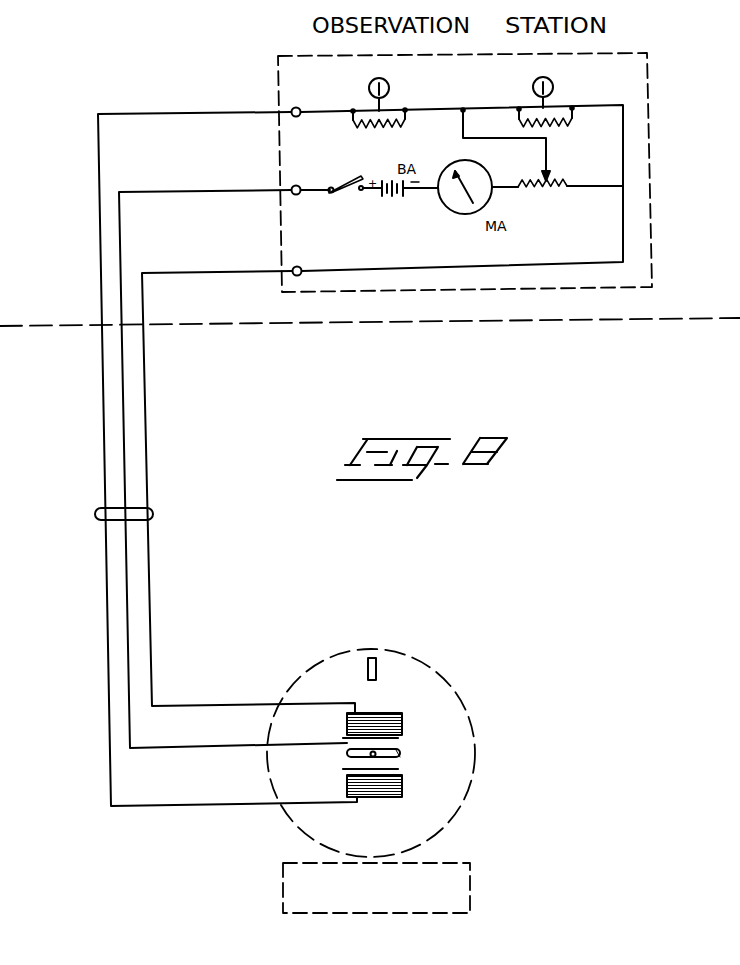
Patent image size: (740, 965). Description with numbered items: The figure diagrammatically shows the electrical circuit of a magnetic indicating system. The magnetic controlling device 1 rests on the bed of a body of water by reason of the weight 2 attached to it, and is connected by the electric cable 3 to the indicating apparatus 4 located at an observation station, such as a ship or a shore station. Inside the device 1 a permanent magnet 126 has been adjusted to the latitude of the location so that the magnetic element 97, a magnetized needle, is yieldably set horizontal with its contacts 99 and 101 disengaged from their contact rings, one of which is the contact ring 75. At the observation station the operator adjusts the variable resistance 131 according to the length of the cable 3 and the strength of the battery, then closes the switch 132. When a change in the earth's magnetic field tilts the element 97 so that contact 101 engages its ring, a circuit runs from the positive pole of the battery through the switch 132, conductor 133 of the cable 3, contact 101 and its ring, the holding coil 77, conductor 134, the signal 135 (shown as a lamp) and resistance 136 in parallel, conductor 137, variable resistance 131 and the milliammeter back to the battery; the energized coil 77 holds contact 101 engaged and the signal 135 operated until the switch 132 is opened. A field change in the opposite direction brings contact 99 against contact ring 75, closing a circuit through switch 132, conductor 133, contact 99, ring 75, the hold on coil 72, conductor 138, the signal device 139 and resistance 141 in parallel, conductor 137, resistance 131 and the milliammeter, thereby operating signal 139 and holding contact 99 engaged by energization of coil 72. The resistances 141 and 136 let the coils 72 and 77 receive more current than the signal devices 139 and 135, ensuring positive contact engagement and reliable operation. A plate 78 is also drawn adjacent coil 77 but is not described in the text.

The magnetic controlling device 1 is at (458, 690).
The weight 2 is at (470, 883).
The electric cable 3 is at (153, 513).
The indicating apparatus 4 is at (650, 187).
The hold on coil 72 is at (393, 797).
The contact ring 75 is at (348, 767).
The holding coil 77 is at (380, 712).
The upper plate 78 is at (397, 740).
The magnetic element 97 is at (347, 753).
The contact 99 is at (400, 757).
The contact 101 is at (399, 755).
The permanent magnet 126 is at (376, 660).
The variable resistance 131 is at (557, 177).
The switch 132 is at (347, 192).
The conductor 133 is at (187, 190).
The conductor 134 is at (152, 630).
The signal 135 is at (556, 84).
The resistance 136 is at (553, 129).
The conductor 137 is at (462, 128).
The conductor 138 is at (105, 616).
The signal device 139 is at (392, 84).
The resistance 141 is at (370, 132).